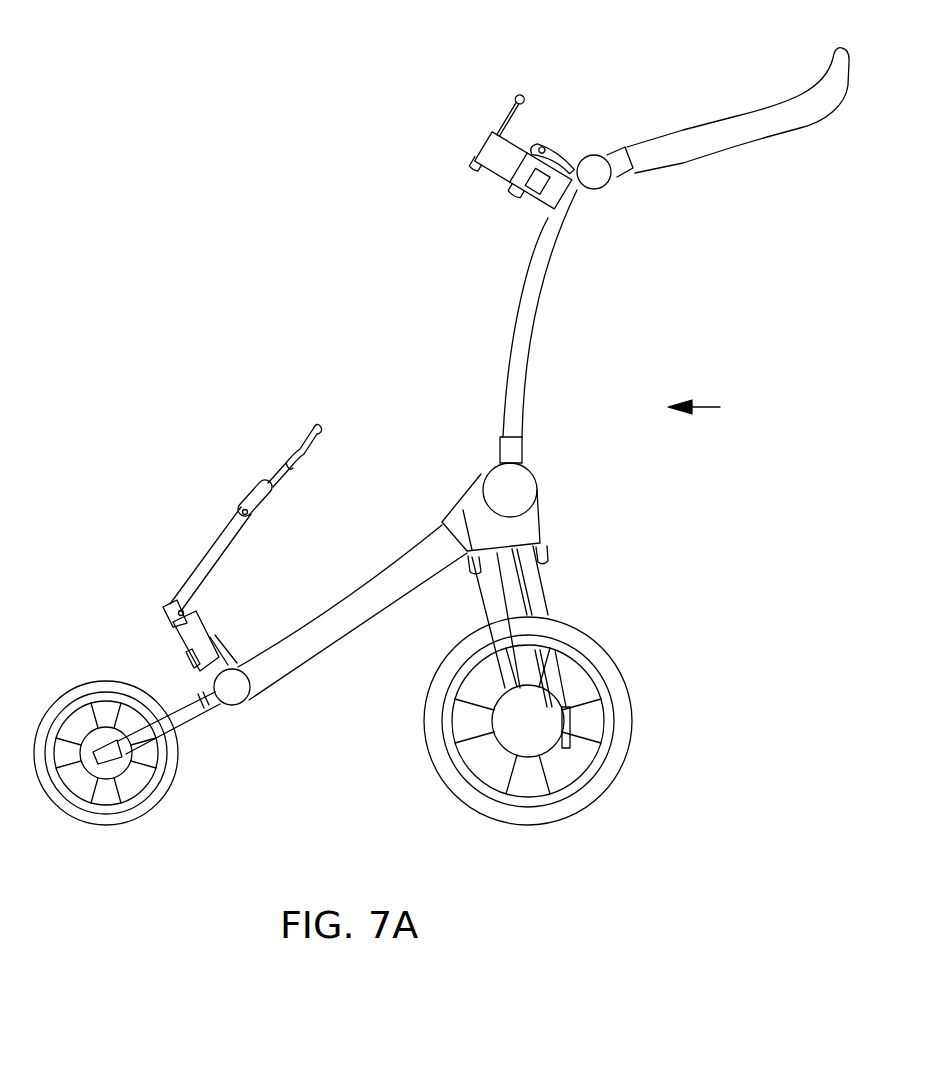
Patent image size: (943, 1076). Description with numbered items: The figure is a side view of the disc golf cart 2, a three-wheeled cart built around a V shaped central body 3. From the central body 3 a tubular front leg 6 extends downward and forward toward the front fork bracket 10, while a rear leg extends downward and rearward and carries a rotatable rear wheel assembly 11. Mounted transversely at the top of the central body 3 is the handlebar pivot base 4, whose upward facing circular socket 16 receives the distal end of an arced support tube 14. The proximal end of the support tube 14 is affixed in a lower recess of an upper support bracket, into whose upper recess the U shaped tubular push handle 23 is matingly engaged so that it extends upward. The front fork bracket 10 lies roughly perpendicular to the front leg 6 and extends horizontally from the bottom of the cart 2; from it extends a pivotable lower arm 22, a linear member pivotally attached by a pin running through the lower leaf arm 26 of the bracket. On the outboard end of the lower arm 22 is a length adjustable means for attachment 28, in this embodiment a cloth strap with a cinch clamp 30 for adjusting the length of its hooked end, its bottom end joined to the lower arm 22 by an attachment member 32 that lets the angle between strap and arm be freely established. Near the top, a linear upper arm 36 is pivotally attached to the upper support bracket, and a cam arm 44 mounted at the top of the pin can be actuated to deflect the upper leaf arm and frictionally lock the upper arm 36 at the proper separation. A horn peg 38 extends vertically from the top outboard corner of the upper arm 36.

The disc golf cart 2 is at (706, 407).
The central body 3 is at (528, 527).
The handlebar pivot base 4 is at (522, 483).
The front leg 6 is at (318, 637).
The front fork bracket 10 is at (617, 686).
The rear wheel assembly 11 is at (237, 690).
The arced support tube 14 is at (527, 313).
The circular socket 16 is at (502, 447).
The lower arm 22 is at (210, 618).
The push handle 23 is at (738, 132).
The lower leaf arm 26 is at (200, 677).
The length adjustable means for attachment 28 is at (203, 567).
The cinch clamp 30 is at (249, 492).
The attachment member 32 is at (176, 607).
The upper arm 36 is at (503, 165).
The horn peg 38 is at (498, 130).
The cam arm 44 is at (555, 147).